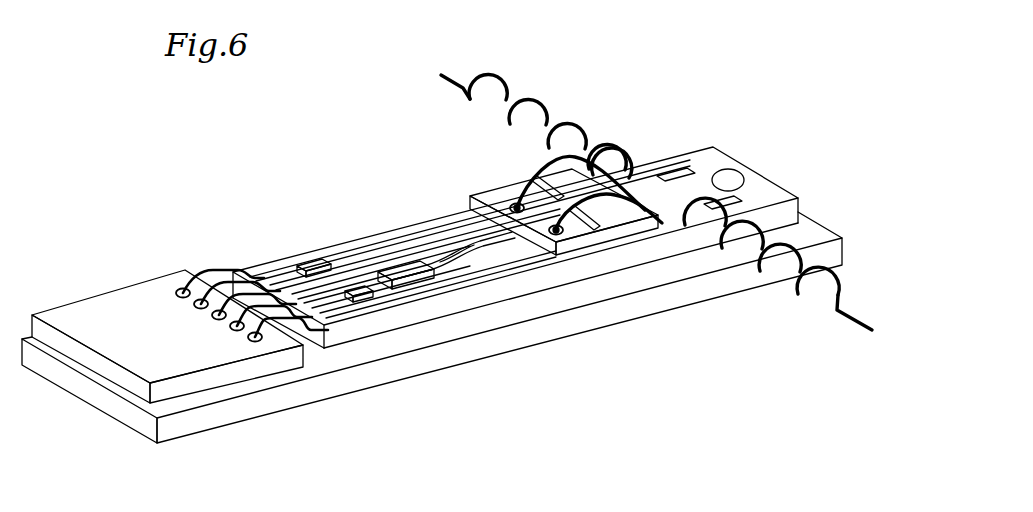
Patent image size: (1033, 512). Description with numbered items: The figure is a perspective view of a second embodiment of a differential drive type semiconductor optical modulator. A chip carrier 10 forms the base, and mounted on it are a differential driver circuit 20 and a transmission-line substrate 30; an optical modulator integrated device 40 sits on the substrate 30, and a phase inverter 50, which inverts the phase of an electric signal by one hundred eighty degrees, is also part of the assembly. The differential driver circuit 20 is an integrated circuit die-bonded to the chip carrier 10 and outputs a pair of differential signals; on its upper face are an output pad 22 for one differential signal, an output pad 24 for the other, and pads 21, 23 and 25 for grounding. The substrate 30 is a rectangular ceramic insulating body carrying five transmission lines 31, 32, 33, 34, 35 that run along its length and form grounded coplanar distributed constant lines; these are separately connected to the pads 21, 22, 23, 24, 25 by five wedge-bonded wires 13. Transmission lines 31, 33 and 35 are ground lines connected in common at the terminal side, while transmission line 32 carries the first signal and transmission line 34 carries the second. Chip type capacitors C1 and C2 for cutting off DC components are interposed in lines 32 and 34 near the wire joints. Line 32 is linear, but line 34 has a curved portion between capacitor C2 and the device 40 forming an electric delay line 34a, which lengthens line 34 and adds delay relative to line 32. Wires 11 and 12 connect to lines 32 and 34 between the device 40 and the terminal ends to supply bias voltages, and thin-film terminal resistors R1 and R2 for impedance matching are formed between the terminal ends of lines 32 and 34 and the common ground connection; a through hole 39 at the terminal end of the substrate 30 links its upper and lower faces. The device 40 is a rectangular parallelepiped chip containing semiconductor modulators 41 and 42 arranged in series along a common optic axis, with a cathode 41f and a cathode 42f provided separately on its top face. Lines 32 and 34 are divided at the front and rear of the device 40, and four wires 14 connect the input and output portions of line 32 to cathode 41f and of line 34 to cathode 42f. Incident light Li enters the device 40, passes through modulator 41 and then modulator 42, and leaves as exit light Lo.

The chip carrier 10 is at (315, 393).
The wire 11 is at (460, 70).
The wire 12 is at (850, 322).
The wires 13 is at (213, 268).
The wires 14 is at (571, 152).
The differential driver circuit 20 is at (78, 318).
The pad 21 is at (177, 288).
The output pad 22 is at (193, 300).
The pad 23 is at (213, 317).
The output pad 24 is at (233, 330).
The pad 25 is at (253, 343).
The transmission-line substrate 30 is at (780, 196).
The transmission line 31 is at (287, 260).
The transmission line 32 is at (400, 268).
The transmission line 33 is at (423, 258).
The transmission line 34 is at (394, 312).
The electric delay line 34a is at (470, 308).
The transmission line 35 is at (356, 308).
The through hole 39 is at (735, 174).
The optical modulator integrated device 40 is at (618, 235).
The semiconductor modulator 41 is at (516, 204).
The cathode 41f is at (505, 204).
The semiconductor modulator 42 is at (590, 243).
The cathode 42f is at (552, 252).
The phase inverter 50 is at (362, 222).
The chip type capacitor C1 is at (303, 258).
The chip type capacitor C2 is at (349, 284).
The terminal resistor R1 is at (668, 174).
The terminal resistor R2 is at (714, 200).
The incident light Li is at (510, 177).
The exit light Lo is at (598, 232).